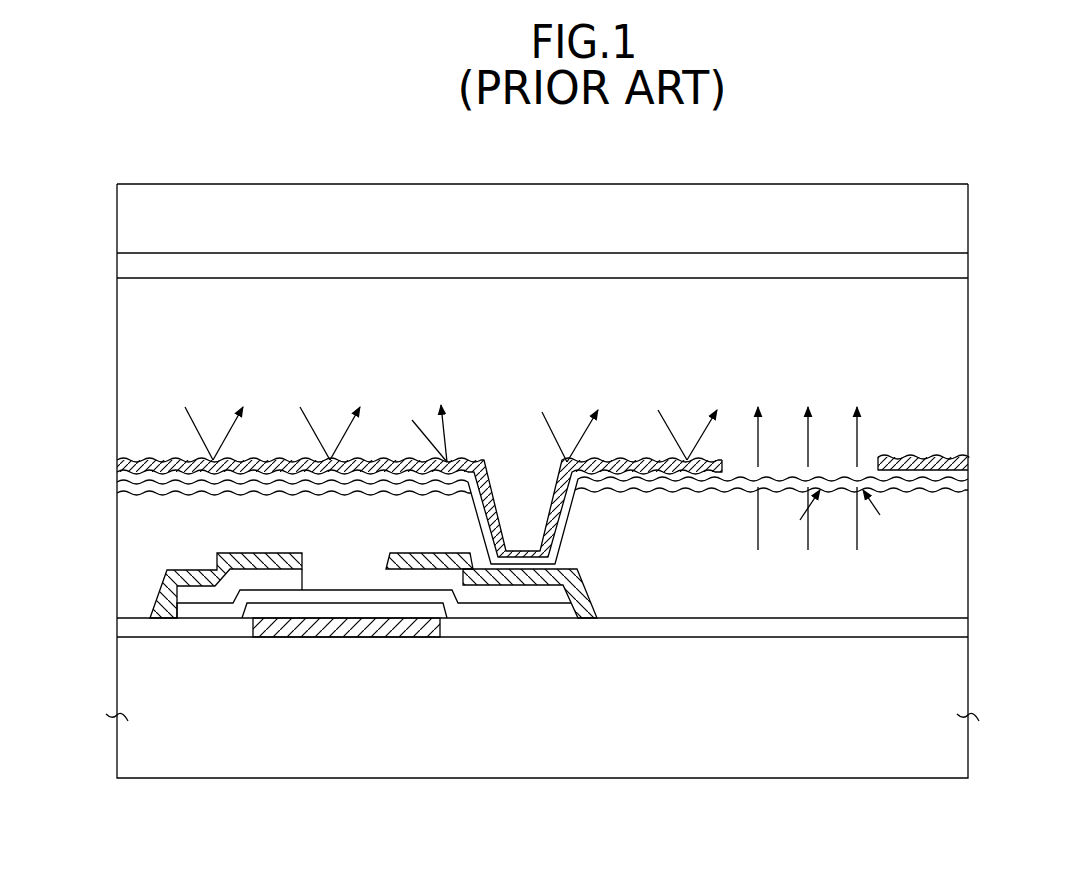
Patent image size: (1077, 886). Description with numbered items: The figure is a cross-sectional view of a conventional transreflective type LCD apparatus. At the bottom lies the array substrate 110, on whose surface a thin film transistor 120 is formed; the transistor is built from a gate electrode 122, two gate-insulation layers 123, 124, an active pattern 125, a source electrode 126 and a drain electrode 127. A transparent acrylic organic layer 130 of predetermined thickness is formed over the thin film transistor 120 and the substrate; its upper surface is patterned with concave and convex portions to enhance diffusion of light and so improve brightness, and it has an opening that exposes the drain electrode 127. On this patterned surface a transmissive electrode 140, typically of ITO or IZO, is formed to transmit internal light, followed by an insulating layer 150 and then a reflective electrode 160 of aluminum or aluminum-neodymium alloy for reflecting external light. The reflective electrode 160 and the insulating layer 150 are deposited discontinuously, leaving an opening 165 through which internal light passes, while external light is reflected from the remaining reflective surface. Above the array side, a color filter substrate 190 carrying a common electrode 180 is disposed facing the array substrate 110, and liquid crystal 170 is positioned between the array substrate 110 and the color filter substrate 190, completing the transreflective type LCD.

The array substrate 110 is at (963, 662).
The thin film transistor 120 is at (373, 712).
The gate electrode 122 is at (352, 630).
The gate-insulation layer 123 is at (246, 584).
The gate-insulation layer 124 is at (458, 612).
The active pattern 125 is at (556, 592).
The source electrode 126 is at (209, 582).
The drain electrode 127 is at (530, 696).
The acrylic organic layer 130 is at (118, 530).
The transmissive electrode 140 is at (968, 480).
The insulating layer 150 is at (968, 468).
The reflective electrode 160 is at (968, 458).
The opening 165 is at (833, 426).
The liquid crystal 170 is at (940, 345).
The common electrode 180 is at (963, 270).
The color filter substrate 190 is at (963, 217).